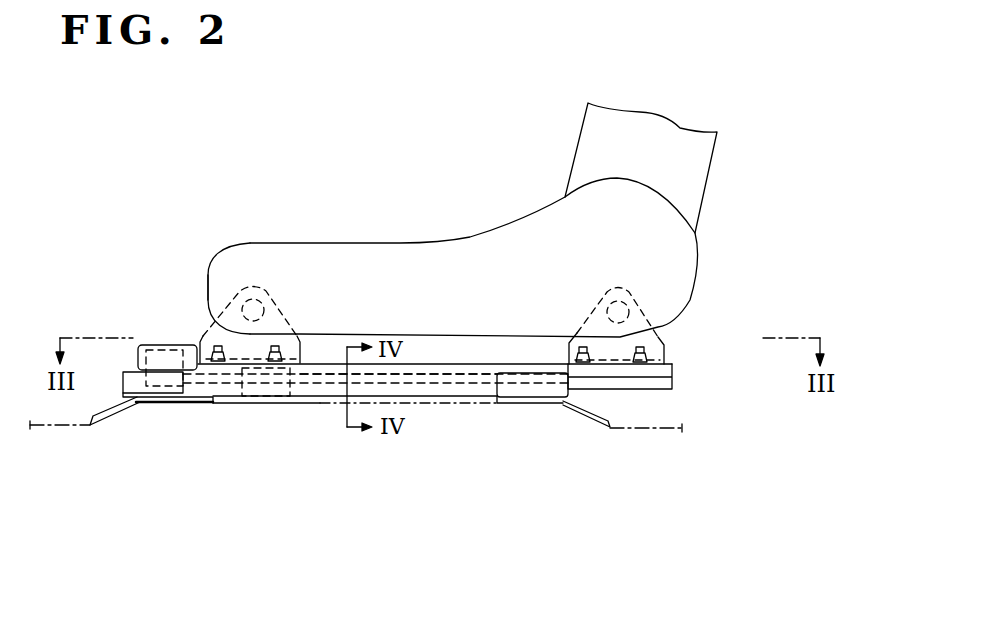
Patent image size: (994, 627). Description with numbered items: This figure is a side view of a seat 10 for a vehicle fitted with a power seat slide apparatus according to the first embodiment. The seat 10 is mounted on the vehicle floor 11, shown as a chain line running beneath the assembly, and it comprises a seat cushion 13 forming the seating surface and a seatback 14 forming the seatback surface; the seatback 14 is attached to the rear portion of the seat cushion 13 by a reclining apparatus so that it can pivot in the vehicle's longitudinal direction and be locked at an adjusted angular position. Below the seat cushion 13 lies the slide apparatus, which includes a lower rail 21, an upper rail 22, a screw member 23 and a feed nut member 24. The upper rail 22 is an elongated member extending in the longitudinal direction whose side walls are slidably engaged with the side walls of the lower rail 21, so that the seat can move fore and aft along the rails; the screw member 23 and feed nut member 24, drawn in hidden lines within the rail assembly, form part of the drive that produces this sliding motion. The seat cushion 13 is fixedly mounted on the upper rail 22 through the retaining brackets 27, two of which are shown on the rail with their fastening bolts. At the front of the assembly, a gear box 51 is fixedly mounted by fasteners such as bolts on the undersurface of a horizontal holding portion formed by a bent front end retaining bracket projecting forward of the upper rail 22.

The seat for a vehicle 10 is at (428, 166).
The vehicle floor 11 is at (52, 423).
The seat cushion 13 is at (294, 243).
The seatback 14 is at (582, 152).
The lower rail 21 is at (138, 387).
The upper rail 22 is at (527, 368).
The screw member 23 is at (429, 378).
The feed nut member 24 is at (268, 386).
The retaining brackets 27 is at (222, 333).
The gear box 51 is at (158, 349).